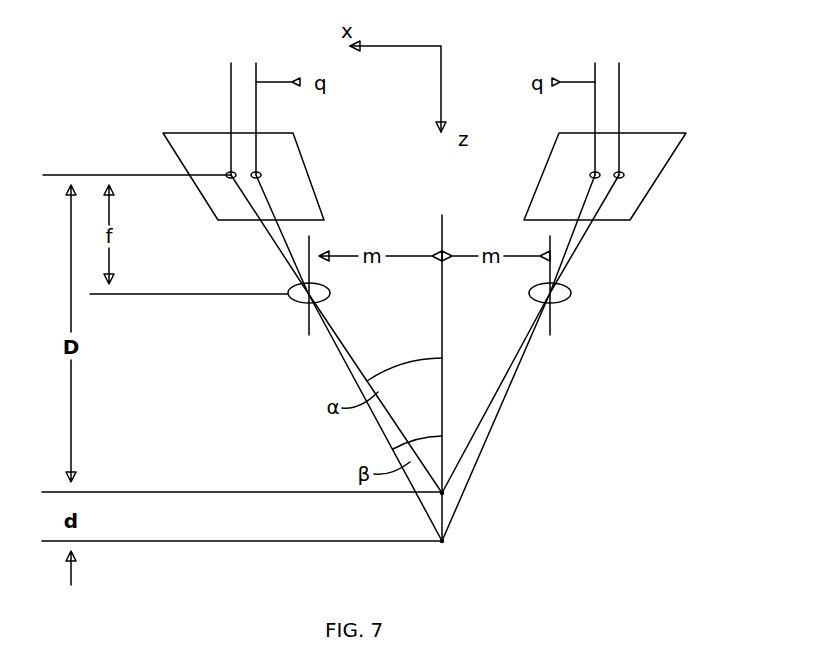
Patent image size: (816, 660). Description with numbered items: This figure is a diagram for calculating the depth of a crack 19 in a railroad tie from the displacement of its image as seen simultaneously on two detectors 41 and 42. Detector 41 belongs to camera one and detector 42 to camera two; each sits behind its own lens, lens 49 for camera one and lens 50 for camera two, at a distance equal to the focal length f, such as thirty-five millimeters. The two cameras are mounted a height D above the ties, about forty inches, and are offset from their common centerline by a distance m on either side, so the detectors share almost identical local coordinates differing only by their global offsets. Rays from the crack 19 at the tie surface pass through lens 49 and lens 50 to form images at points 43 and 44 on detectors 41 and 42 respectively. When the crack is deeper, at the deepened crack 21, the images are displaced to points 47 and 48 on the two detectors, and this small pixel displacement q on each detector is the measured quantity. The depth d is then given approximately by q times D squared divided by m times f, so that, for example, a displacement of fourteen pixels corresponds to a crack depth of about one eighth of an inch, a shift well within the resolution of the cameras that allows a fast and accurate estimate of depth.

The detector 41 is at (293, 169).
The detector 42 is at (658, 143).
The point 43 is at (230, 170).
The point 47 is at (254, 180).
The point 44 is at (623, 176).
The point 48 is at (596, 178).
The lens 49 is at (297, 302).
The lens 50 is at (571, 293).
The crack 19 is at (444, 493).
The crack (deepened) 21 is at (444, 541).